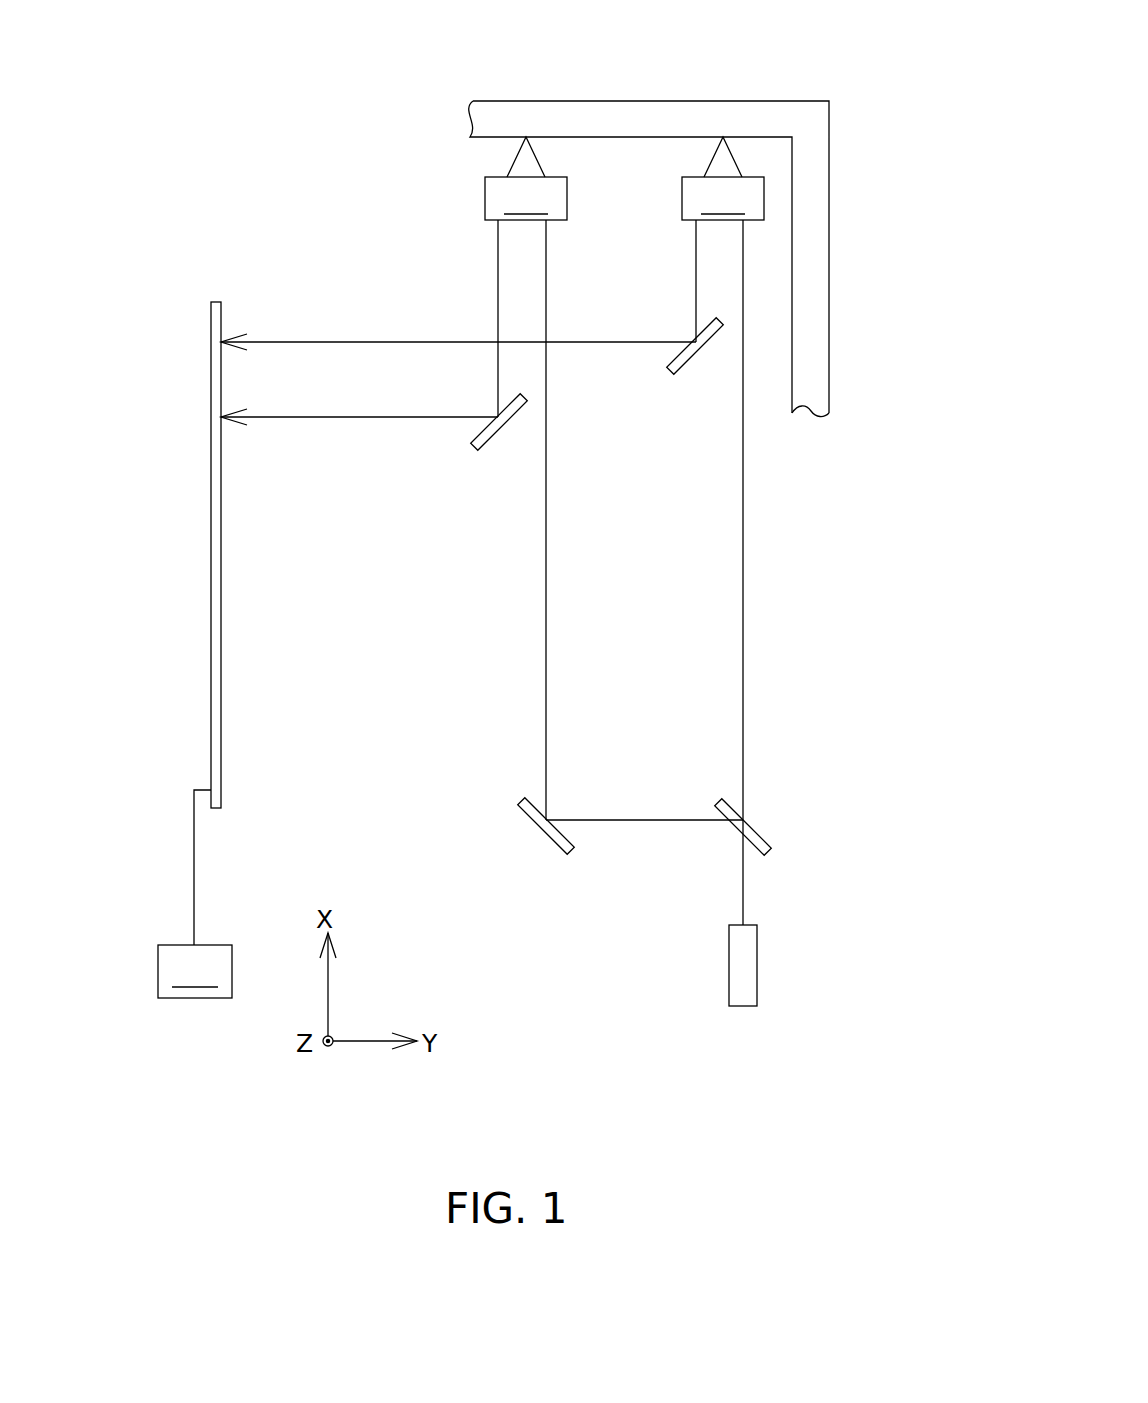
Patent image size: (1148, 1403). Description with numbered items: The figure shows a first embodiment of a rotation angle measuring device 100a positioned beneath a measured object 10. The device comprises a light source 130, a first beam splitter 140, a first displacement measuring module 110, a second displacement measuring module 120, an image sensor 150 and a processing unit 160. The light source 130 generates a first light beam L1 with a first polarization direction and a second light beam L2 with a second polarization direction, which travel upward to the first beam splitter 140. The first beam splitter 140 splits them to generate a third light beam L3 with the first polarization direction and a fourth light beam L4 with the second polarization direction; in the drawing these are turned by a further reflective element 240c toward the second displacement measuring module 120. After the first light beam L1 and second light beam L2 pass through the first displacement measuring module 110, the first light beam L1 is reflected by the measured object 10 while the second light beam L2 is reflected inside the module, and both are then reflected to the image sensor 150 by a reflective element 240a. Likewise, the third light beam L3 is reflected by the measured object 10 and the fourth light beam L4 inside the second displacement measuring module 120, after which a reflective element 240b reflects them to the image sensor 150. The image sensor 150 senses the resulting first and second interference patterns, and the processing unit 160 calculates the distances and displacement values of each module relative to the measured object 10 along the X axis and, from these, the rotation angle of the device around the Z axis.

The rotation angle measuring device 100a is at (320, 82).
The measured object 10 is at (618, 117).
The first displacement measuring module 110 is at (723, 178).
The second displacement measuring module 120 is at (526, 178).
The light source 130 is at (758, 965).
The first beam splitter 140 is at (764, 838).
The image sensor 150 is at (216, 300).
The processing unit 160 is at (195, 894).
The reflective element 240a is at (670, 372).
The reflective element 240b is at (472, 447).
The third mirror 240c is at (535, 836).
The first light beam L1 is at (745, 663).
The second light beam L2 is at (745, 885).
The third light beam L3 is at (546, 695).
The fourth light beam L4 is at (458, 379).